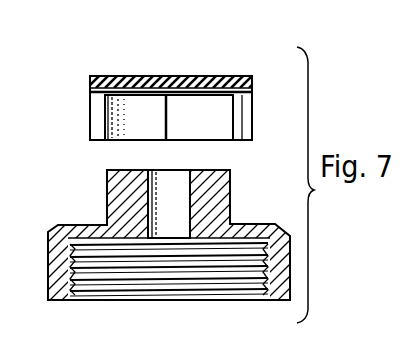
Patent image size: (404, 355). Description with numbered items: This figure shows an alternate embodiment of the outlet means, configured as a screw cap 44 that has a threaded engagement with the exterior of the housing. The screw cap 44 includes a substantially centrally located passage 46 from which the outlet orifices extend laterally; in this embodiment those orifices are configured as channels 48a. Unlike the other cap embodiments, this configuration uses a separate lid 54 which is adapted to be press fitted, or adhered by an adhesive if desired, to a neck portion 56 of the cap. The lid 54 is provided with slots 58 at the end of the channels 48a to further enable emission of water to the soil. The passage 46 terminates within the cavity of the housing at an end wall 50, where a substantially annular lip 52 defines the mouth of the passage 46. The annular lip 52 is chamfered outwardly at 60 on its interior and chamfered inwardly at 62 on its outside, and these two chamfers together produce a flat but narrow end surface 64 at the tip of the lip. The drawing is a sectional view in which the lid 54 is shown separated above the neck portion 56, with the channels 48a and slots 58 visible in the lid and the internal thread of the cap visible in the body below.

The screw cap 44 is at (66, 136).
The lid 54 is at (138, 75).
The channels 48a is at (206, 103).
The slots 58 is at (233, 123).
The passage 46 is at (183, 176).
The neck portion 56 is at (107, 193).
The end wall 50 is at (230, 240).
The annular lip 52 is at (197, 243).
The interior chamfer 60 is at (178, 243).
The exterior chamfer 62 is at (203, 243).
The end surface 64 is at (142, 243).